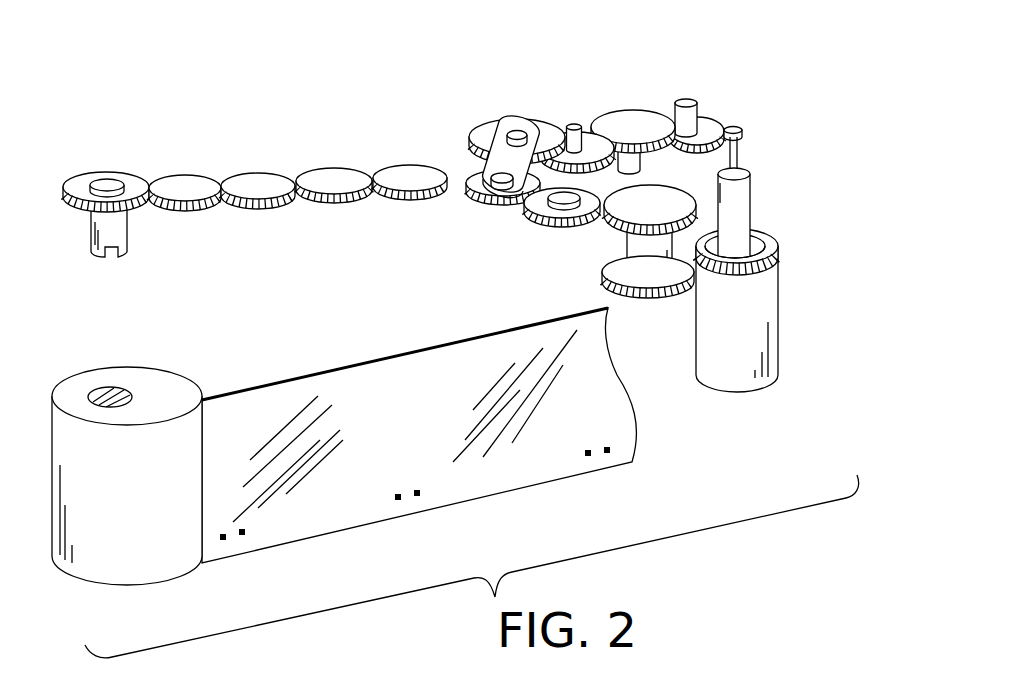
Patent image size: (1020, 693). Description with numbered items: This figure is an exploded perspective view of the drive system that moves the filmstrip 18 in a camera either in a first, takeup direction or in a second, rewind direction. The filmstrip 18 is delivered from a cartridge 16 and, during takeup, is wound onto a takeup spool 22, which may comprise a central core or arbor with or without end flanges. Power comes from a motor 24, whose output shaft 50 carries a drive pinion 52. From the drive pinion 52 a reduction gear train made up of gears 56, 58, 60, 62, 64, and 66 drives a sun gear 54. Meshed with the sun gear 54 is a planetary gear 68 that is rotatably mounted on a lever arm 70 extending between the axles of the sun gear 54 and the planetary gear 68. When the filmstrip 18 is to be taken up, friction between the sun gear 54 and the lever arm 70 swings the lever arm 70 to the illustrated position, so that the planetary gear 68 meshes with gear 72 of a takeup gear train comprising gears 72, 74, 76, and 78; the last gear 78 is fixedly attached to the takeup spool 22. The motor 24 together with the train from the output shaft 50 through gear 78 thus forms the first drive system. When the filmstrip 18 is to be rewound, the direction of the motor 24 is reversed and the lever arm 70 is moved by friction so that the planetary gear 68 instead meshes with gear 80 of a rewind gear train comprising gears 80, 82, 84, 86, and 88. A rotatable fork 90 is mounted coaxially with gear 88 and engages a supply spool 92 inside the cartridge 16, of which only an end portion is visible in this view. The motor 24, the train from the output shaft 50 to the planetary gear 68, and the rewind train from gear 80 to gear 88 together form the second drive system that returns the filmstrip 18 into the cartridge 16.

The cartridge 16 is at (163, 563).
The filmstrip 18 is at (302, 524).
The takeup spool 22 is at (710, 378).
The motor 24 is at (750, 217).
The output shaft 50 is at (741, 154).
The drive pinion 52 is at (737, 128).
The sun gear 54 is at (470, 131).
The gear 56 is at (700, 120).
The gear 58 is at (682, 108).
The gear 60 is at (643, 109).
The gear 62 is at (641, 159).
The gear 64 is at (594, 152).
The gear 66 is at (572, 128).
The planetary gear 68 is at (467, 198).
The lever arm 70 is at (528, 122).
The gear 72 is at (527, 208).
The gear 74 is at (603, 223).
The gear 76 is at (621, 293).
The gear 78 is at (784, 260).
The gear 80 is at (420, 167).
The gear 82 is at (343, 170).
The gear 84 is at (265, 174).
The gear 86 is at (197, 176).
The gear 88 is at (112, 179).
The rotatable fork 90 is at (122, 238).
The supply spool 92 is at (128, 391).